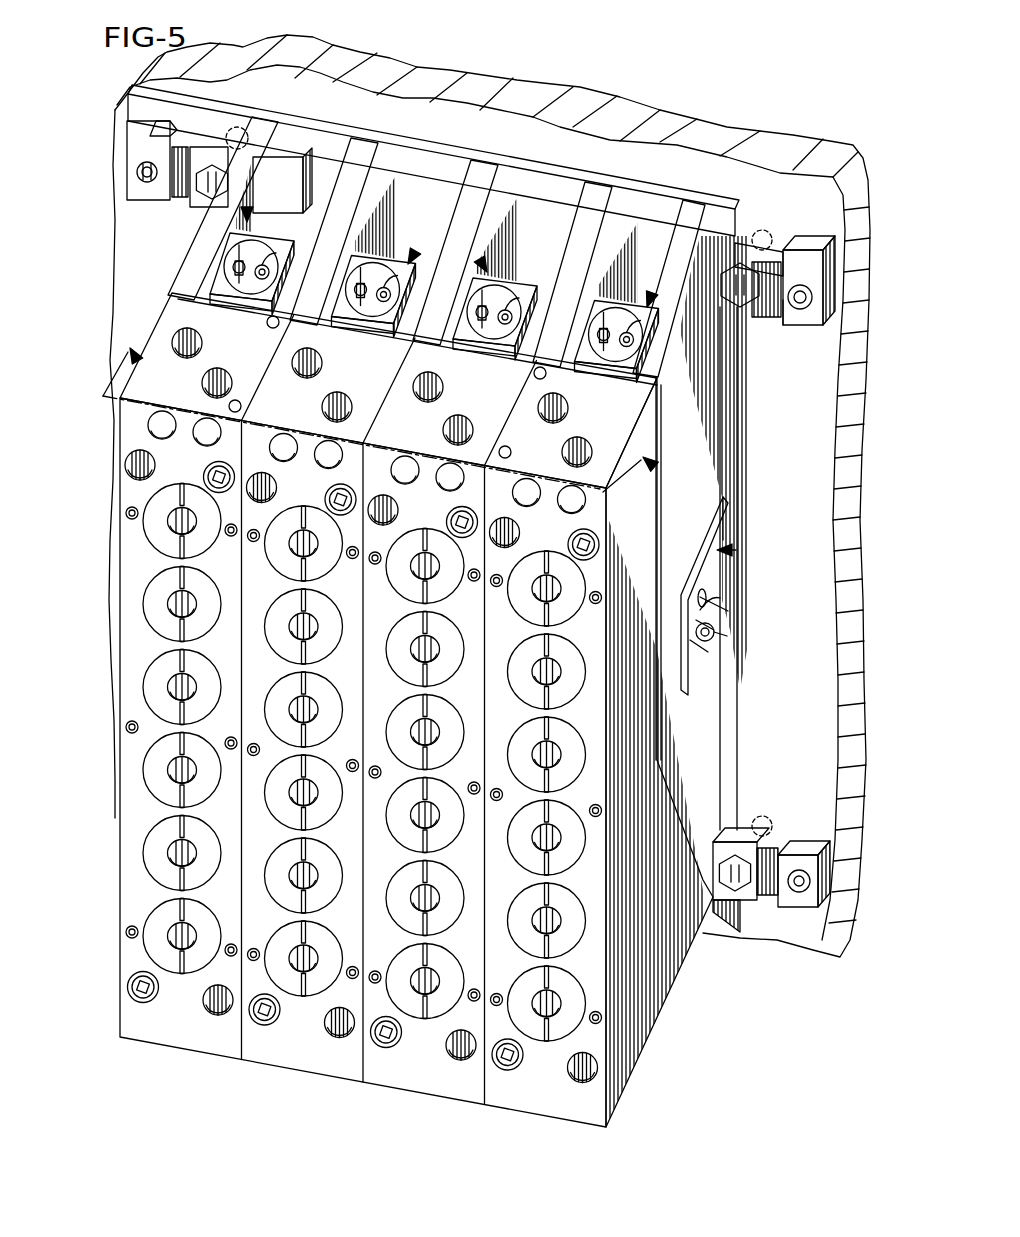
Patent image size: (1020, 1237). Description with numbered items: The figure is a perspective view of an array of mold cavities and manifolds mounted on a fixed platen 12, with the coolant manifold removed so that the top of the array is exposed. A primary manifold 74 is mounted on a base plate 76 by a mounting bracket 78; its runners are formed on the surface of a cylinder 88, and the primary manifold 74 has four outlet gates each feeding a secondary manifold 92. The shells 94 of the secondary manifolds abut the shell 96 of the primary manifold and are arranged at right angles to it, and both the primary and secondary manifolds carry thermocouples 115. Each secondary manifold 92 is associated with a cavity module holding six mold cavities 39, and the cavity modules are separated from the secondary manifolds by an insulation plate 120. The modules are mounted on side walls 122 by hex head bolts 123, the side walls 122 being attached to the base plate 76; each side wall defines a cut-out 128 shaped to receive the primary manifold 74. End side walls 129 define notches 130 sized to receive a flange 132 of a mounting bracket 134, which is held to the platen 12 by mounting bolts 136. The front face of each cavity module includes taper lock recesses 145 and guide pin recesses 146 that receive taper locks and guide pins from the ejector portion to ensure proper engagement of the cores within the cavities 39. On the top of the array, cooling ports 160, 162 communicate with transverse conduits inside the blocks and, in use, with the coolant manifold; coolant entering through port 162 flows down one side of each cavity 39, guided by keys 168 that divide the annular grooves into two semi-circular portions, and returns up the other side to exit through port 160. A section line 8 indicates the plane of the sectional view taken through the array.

The section line 8- 8 is at (378, 437).
The fixed platen 12 is at (793, 760).
The mold cavities 39 is at (363, 762).
The primary manifold 74 is at (736, 550).
The base plate 76 is at (739, 406).
The mounting bracket 78 is at (720, 538).
The cylinder 88 is at (713, 581).
The secondary manifold 92 is at (243, 213).
The shells of the secondary manifolds 94 is at (622, 361).
The shell of the primary manifold 96 is at (717, 578).
The thermocouples 115 is at (230, 278).
The insulation plate 120 is at (392, 333).
The side walls 122 is at (370, 161).
The hex head bolts 123 is at (593, 605).
The cut-out 128 is at (693, 638).
The end side walls 129 is at (182, 273).
The notches 130 is at (242, 127).
The flange 132 is at (716, 232).
The mounting bracket 134 is at (215, 140).
The mounting bolts 136 is at (790, 319).
The taper lock recesses 145 is at (515, 528).
The guide pin recesses 146 is at (155, 465).
The cooling port 160 is at (538, 408).
The cooling port 162 is at (562, 452).
The keys 168 is at (426, 533).